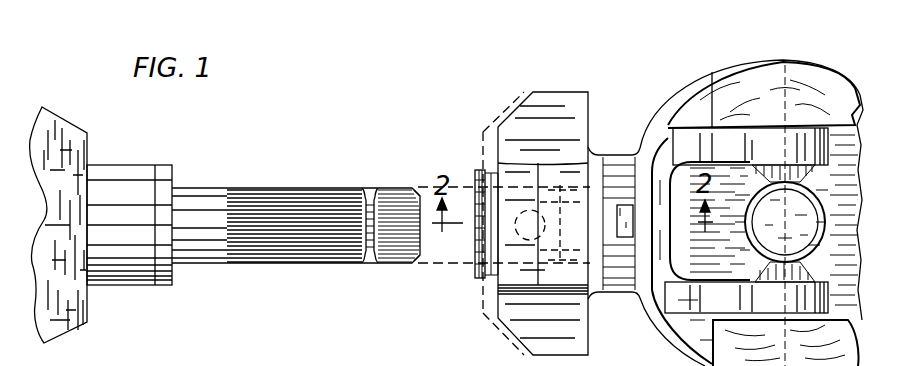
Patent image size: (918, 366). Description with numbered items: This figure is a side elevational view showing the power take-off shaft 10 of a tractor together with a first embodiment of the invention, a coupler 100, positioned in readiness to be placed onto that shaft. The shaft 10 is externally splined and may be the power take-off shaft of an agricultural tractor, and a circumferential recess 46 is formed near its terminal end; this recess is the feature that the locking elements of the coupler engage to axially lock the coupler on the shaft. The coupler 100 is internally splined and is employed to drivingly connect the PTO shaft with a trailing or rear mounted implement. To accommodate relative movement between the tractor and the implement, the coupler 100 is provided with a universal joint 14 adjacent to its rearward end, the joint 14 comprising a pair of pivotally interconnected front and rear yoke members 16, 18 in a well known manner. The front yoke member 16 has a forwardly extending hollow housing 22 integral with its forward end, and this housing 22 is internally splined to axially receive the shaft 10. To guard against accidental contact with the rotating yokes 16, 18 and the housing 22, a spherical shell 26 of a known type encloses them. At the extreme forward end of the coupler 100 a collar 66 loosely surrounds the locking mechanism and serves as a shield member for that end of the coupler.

The power take-off shaft 10 is at (295, 188).
The circumferential recess 46 is at (366, 193).
The hollow housing 22 is at (483, 272).
The collar 66 is at (535, 92).
The coupler 100 is at (631, 86).
The universal joint 14 is at (686, 152).
The spherical shell 26 is at (802, 72).
The front yoke member 16 is at (792, 145).
The rear yoke member 18 is at (838, 258).